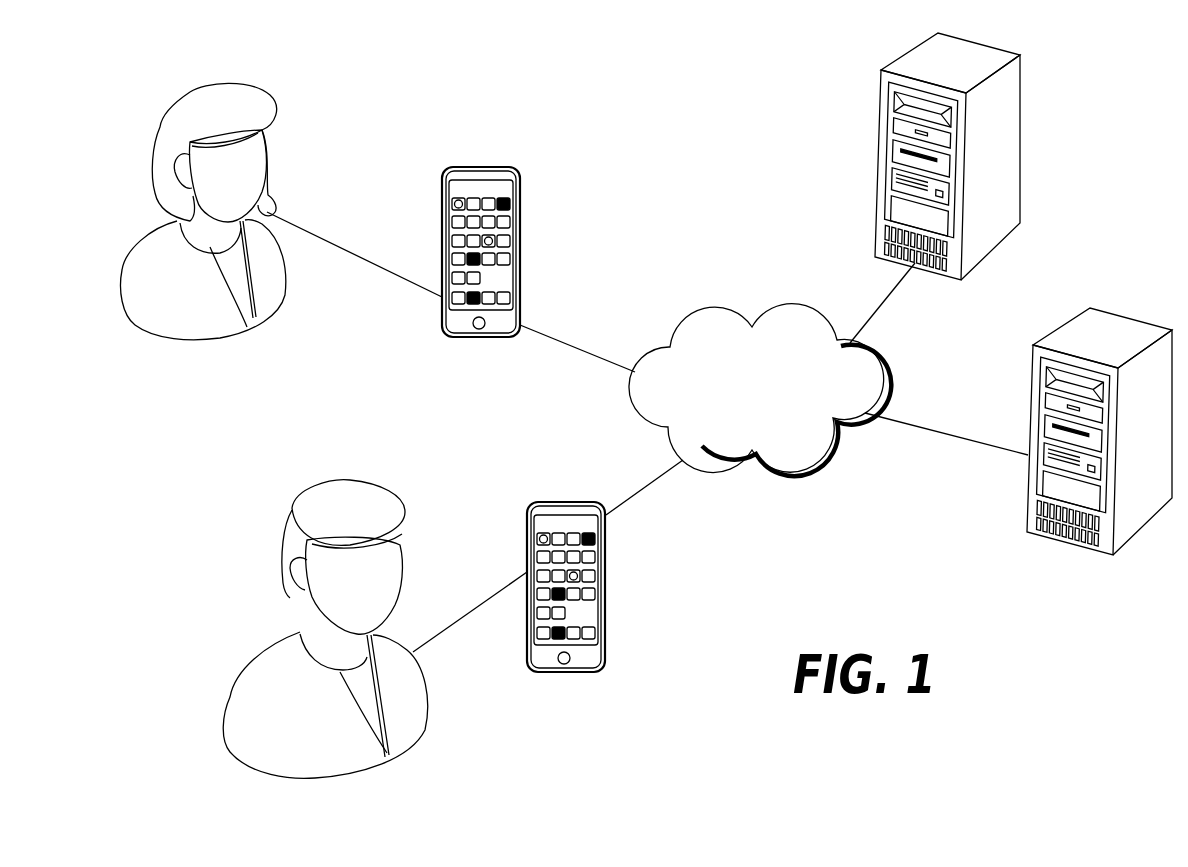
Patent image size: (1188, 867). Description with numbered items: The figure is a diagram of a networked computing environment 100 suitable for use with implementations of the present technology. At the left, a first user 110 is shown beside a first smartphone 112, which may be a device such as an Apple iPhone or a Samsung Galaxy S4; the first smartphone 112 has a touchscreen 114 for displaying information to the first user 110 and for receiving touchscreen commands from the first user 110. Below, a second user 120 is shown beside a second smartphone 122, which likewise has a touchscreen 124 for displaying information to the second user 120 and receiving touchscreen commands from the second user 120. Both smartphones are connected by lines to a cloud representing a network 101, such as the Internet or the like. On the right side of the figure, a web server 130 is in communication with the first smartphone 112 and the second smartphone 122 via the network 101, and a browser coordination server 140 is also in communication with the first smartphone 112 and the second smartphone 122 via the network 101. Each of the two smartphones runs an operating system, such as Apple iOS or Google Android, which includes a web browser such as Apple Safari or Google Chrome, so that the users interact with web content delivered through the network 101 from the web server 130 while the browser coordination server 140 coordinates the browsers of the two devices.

The networked computing environment 100 is at (730, 67).
The network 101 is at (760, 399).
The first user 110 is at (181, 89).
The first smartphone 112 is at (475, 272).
The touchscreen 114 is at (474, 185).
The second user 120 is at (325, 475).
The second smartphone 122 is at (559, 612).
The touchscreen 124 is at (558, 524).
The web server 130 is at (1008, 168).
The browser coordination server 140 is at (1123, 323).